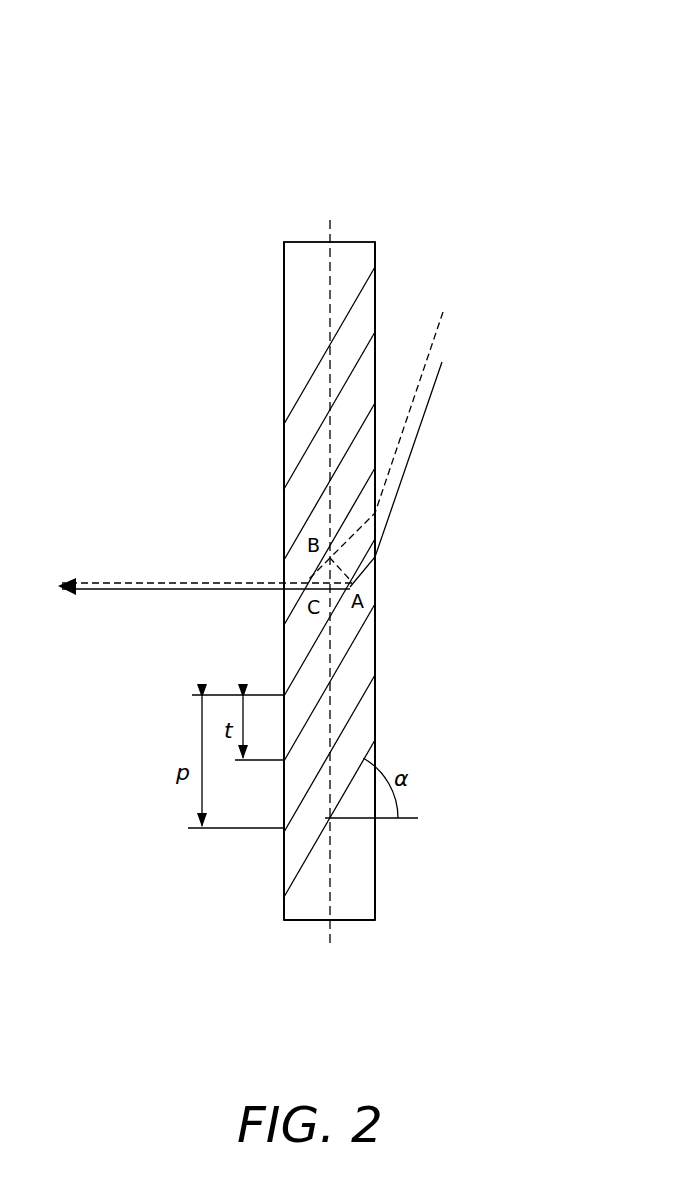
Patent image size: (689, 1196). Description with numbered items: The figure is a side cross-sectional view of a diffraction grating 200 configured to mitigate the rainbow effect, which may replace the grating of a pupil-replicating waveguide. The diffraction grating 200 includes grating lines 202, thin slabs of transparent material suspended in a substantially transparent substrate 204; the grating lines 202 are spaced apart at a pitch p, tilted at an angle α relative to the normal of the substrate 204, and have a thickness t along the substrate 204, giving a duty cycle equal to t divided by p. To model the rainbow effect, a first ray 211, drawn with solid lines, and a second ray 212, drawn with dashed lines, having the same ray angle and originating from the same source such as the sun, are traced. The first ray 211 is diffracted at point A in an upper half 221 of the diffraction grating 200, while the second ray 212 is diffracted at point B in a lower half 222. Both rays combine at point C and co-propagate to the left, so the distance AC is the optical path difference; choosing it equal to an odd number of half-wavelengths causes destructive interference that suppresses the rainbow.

The diffraction grating 200 is at (350, 132).
The lower half 222 is at (305, 241).
The upper half 221 is at (355, 241).
The grating lines 202 is at (376, 706).
The substrate 204 is at (376, 858).
The second ray 212 is at (443, 323).
The first ray 211 is at (428, 407).